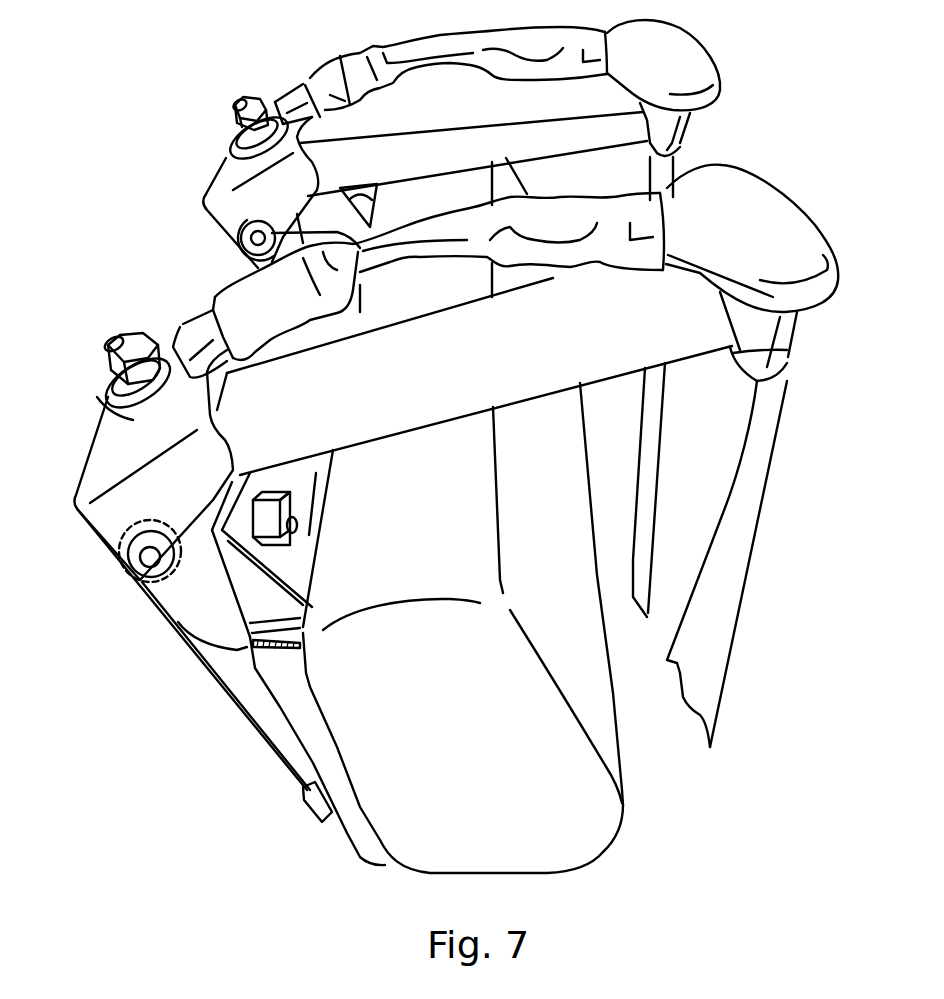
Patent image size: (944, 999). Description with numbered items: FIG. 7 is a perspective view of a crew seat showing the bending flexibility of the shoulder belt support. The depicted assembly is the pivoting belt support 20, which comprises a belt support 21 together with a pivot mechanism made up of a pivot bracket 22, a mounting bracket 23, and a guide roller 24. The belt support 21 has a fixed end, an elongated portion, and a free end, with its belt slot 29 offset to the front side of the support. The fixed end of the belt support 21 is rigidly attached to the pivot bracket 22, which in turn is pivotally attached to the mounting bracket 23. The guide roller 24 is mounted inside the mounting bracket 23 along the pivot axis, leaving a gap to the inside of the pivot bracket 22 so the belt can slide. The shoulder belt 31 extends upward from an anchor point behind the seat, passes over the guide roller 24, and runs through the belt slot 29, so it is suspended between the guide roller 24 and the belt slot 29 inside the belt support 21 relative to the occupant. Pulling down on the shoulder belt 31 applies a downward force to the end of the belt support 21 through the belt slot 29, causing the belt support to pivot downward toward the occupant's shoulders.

The pivoting belt support 20 is at (726, 84).
The belt support 21 is at (262, 240).
The pivot bracket 22 is at (110, 457).
The mounting bracket 23 is at (205, 588).
The guide roller 24 is at (110, 550).
The belt slot 29 is at (787, 354).
The shoulder belt 31 is at (536, 368).